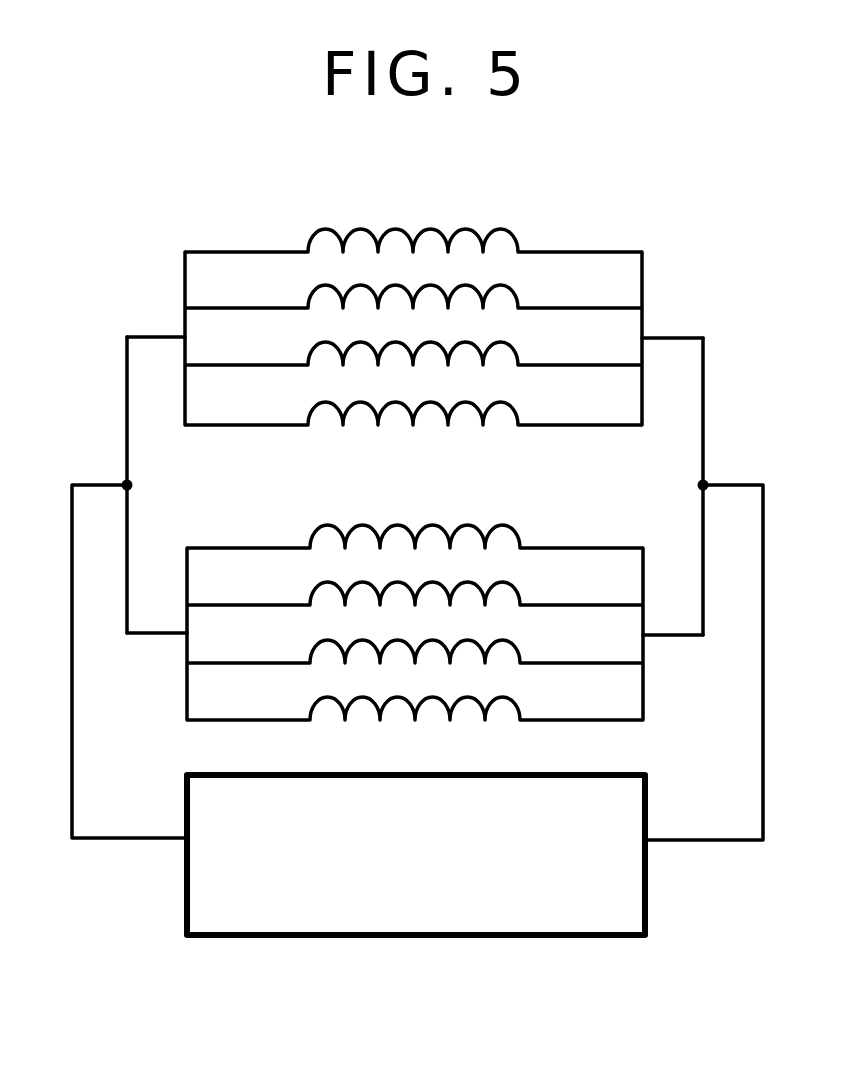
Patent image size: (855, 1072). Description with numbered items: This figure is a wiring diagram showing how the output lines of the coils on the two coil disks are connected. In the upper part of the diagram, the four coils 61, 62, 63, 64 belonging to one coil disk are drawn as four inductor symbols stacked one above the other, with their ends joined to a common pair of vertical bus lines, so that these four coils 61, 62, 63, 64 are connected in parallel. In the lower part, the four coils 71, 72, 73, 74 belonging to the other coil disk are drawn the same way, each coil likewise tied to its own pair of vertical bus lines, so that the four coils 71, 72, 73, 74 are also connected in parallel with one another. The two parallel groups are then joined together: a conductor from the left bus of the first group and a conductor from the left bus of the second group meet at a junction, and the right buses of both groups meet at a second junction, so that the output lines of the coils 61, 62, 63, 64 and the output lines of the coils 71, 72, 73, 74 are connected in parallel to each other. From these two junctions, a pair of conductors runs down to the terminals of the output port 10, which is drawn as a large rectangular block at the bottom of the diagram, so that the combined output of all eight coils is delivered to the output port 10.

The output port 10 is at (298, 941).
The coil 61 is at (357, 228).
The coil 62 is at (429, 291).
The coil 63 is at (390, 326).
The coil 64 is at (503, 381).
The coil 71 is at (361, 527).
The coil 72 is at (495, 582).
The coil 73 is at (389, 644).
The coil 74 is at (437, 701).